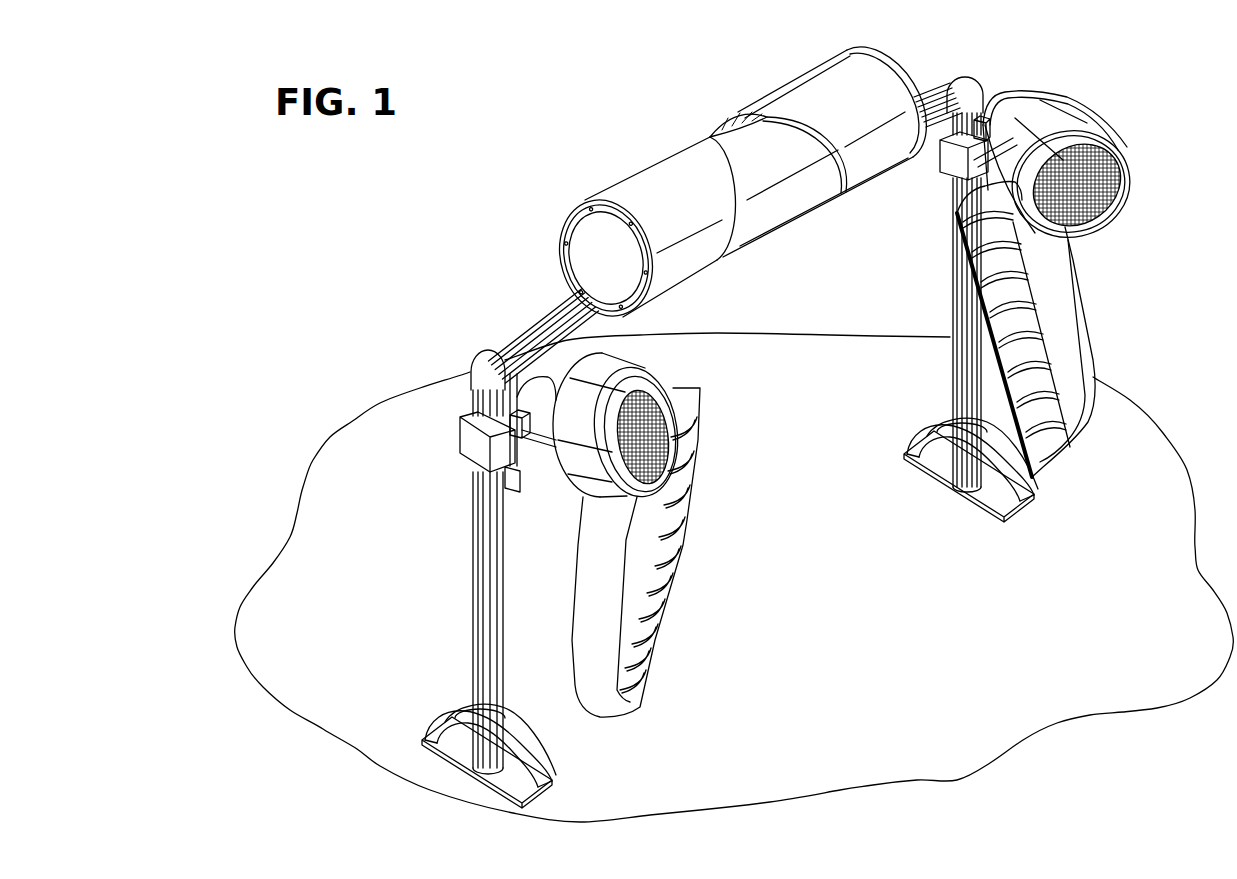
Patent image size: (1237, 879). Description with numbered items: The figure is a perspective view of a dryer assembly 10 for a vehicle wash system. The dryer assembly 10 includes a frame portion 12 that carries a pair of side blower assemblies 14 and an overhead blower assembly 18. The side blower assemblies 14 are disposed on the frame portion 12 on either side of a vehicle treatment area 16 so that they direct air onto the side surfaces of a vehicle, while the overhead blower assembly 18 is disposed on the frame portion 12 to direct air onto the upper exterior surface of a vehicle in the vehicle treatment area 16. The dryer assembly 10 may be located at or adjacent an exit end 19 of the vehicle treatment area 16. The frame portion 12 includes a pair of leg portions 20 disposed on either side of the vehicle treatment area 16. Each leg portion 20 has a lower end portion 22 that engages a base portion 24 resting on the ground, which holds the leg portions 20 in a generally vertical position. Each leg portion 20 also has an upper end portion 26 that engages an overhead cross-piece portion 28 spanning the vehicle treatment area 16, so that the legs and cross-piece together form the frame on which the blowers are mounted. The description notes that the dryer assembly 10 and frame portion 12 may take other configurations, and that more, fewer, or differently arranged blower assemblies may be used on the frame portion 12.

The dryer assembly 10 is at (736, 185).
The frame portion 12 is at (950, 62).
The side blower assemblies 14 is at (702, 526).
The vehicle treatment area 16 is at (860, 548).
The overhead blower assembly 18 is at (656, 220).
The exit end 19 is at (424, 253).
The leg portions 20 is at (478, 595).
The lower end portion 22 is at (477, 757).
The base portion 24 is at (538, 795).
The upper end portion 26 is at (488, 373).
The overhead cross-piece portion 28 is at (532, 330).